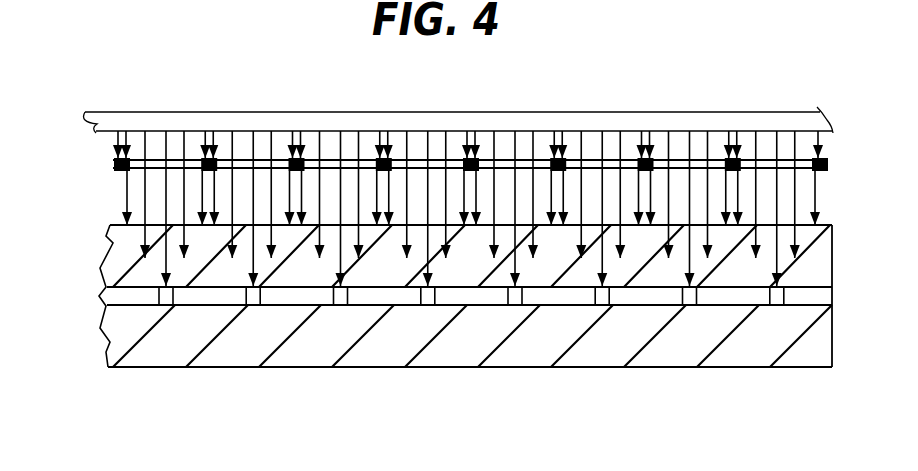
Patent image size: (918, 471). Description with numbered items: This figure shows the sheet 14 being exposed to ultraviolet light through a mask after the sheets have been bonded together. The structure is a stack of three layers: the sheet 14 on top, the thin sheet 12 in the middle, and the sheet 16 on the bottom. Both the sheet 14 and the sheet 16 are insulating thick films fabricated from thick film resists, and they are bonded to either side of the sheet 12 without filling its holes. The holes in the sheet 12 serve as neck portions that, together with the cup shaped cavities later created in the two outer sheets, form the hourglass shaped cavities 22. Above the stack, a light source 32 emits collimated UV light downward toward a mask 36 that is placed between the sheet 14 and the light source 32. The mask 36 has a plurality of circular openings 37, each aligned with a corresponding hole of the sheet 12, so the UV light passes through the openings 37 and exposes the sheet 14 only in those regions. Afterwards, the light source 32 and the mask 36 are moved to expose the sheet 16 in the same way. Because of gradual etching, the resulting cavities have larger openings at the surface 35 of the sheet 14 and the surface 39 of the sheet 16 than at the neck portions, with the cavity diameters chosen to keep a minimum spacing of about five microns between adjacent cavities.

The light source 32 is at (100, 116).
The mask 36 is at (114, 166).
The openings 37 is at (242, 166).
The surface 35 is at (107, 227).
The sheet 14 is at (108, 251).
The sheet 12 is at (94, 293).
The hourglass shaped cavities 22 is at (603, 291).
The sheet 16 is at (108, 350).
The surface 39 is at (131, 368).